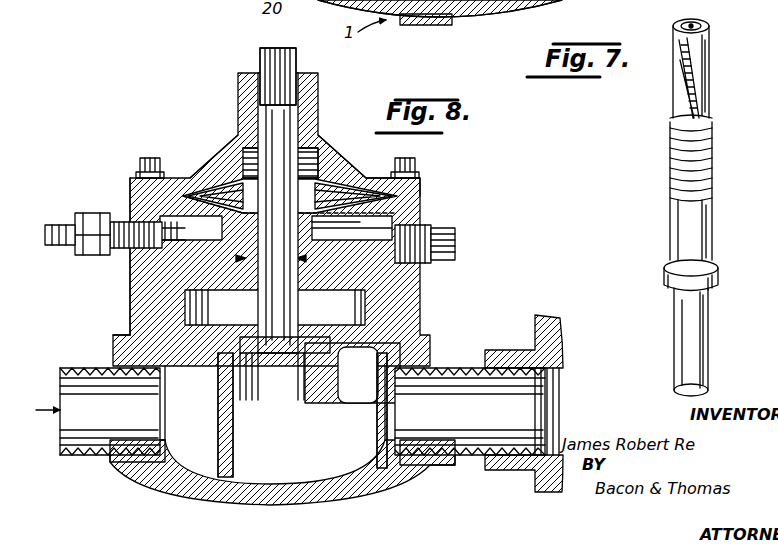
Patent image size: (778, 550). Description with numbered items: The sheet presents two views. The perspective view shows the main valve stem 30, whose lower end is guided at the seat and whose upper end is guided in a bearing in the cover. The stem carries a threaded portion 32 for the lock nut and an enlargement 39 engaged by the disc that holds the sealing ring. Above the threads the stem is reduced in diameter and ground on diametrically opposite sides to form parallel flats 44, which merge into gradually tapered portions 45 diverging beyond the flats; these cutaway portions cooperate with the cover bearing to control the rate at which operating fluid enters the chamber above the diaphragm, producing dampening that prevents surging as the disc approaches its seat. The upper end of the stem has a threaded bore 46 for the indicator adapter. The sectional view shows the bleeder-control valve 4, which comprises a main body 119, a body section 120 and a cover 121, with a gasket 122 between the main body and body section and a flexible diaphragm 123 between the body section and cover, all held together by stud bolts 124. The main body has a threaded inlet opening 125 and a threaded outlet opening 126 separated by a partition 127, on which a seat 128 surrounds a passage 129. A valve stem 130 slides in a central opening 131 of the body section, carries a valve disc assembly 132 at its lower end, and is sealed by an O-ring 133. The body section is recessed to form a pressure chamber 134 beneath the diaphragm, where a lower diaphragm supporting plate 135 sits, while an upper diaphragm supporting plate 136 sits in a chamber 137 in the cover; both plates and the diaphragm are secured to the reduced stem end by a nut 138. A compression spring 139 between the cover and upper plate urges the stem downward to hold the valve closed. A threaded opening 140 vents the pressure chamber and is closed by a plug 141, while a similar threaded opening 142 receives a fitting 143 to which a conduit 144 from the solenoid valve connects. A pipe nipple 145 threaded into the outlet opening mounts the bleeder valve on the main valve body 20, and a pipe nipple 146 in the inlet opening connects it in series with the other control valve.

In FIG. 8, the bleeder-control valve 4 is at (424, 308).
In FIG. 8, the body 20 is at (548, 316).
In FIG. 8, the main body 119 is at (193, 486).
In FIG. 8, the body section 120 is at (130, 290).
In FIG. 8, the cover 121 is at (205, 170).
In FIG. 8, the gasket 122 is at (130, 324).
In FIG. 8, the flexible diaphragm 123 is at (422, 190).
In FIG. 8, the stud bolts 124 is at (150, 160).
In FIG. 8, the threaded inlet opening 125 is at (116, 462).
In FIG. 8, the threaded outlet opening 126 is at (418, 470).
In FIG. 8, the partition 127 is at (233, 433).
In FIG. 8, the seat 128 is at (333, 392).
In FIG. 8, the passage 129 is at (249, 396).
In FIG. 8, the valve stem 130 is at (262, 302).
In FIG. 8, the central opening 131 is at (294, 296).
In FIG. 8, the valve disc assembly 132 is at (285, 216).
In FIG. 8, the O-ring 133 is at (244, 262).
In FIG. 8, the pressure chamber 134 is at (340, 224).
In FIG. 8, the diaphragm supporting plate 135 is at (191, 229).
In FIG. 8, the diaphragm supporting plate 136 is at (330, 196).
In FIG. 8, the chamber 137 is at (356, 184).
In FIG. 8, the nut 138 is at (265, 163).
In FIG. 8, the compression spring 139 is at (243, 150).
In FIG. 8, the threaded opening 140 is at (425, 254).
In FIG. 8, the plug 141 is at (448, 228).
In FIG. 8, the threaded opening 142 is at (136, 260).
In FIG. 8, the fitting 143 is at (102, 213).
In FIG. 8, the conduit 144 is at (56, 224).
In FIG. 8, the pipe nipple 145 is at (468, 458).
In FIG. 8, the pipe nipple 146 is at (82, 458).
In FIG. 7, the valve stem 30 is at (708, 353).
In FIG. 7, the threaded portion 32 is at (712, 146).
In FIG. 7, the enlargement 39 is at (718, 276).
In FIG. 7, the parallel flats 44 is at (677, 100).
In FIG. 7, the tapered portions 45 is at (710, 42).
In FIG. 7, the threaded bore 46 is at (710, 25).